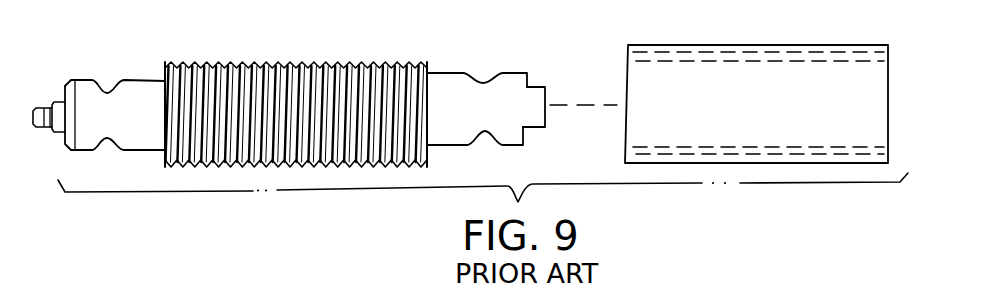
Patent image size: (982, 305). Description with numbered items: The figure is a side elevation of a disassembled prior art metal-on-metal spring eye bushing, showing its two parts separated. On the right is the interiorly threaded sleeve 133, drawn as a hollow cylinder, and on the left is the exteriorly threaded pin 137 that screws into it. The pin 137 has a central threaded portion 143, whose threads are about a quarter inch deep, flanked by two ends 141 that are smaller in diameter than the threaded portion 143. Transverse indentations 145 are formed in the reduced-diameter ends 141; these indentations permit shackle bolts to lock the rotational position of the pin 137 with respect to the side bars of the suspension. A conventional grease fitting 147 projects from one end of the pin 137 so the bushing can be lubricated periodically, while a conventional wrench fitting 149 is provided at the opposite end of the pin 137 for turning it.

The interiorly threaded sleeve 133 is at (693, 53).
The exteriorly threaded pin 137 is at (389, 52).
The ends of the pin 141 is at (93, 151).
The central threaded portion 143 is at (271, 34).
The transverse indentations 145 is at (105, 91).
The grease fitting 147 is at (59, 129).
The wrench fitting 149 is at (537, 87).